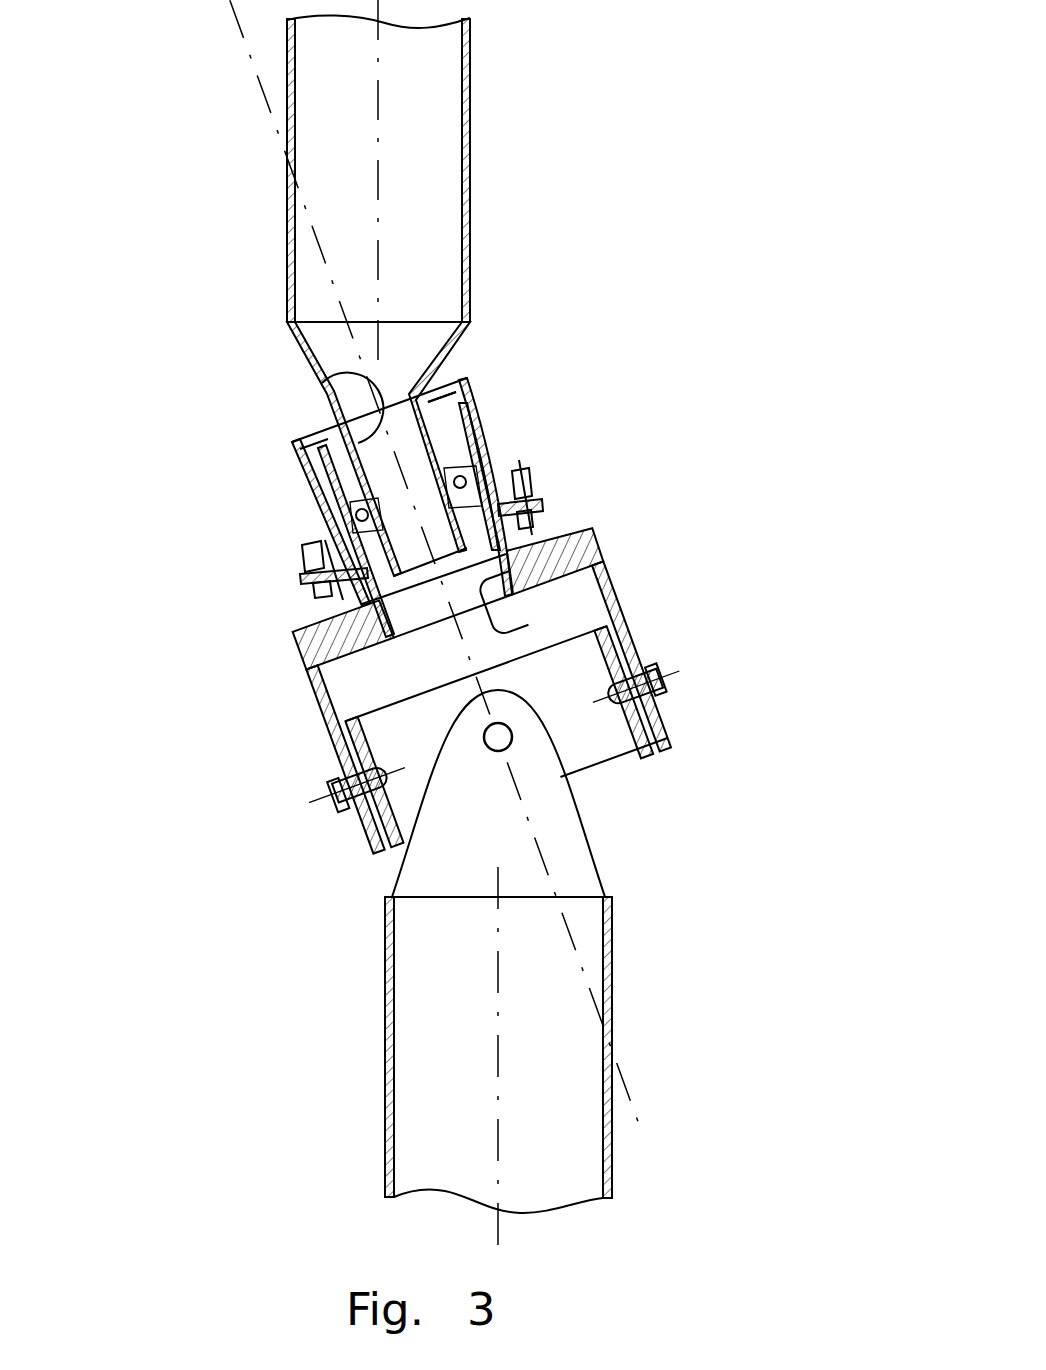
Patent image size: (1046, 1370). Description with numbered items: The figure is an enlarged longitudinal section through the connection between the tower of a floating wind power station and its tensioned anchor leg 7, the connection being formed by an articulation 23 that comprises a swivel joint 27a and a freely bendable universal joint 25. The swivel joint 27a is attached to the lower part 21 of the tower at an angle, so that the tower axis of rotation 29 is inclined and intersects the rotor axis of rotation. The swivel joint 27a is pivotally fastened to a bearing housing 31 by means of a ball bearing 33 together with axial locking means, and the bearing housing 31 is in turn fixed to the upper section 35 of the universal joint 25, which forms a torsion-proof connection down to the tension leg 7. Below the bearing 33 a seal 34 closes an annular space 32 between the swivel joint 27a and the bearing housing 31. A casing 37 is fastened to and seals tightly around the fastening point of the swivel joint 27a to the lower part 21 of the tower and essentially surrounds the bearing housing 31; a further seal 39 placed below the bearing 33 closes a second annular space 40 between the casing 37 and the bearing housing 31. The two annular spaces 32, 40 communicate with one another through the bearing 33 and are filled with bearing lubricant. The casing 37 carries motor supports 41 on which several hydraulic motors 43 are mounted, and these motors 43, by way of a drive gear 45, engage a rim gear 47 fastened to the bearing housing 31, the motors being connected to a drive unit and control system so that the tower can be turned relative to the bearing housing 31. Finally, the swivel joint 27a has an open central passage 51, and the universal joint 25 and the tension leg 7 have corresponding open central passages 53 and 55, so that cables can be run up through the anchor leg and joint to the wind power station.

The tensioned anchor leg 7 is at (384, 1088).
The lower part of the tower 21 is at (472, 88).
The articulation 23 is at (694, 278).
The universal joint 25 is at (672, 742).
The swivel joint 27a is at (297, 461).
The tower axis of rotation 29 is at (233, 21).
The bearing housing 31 is at (515, 550).
The annular space 32 is at (468, 480).
The ball bearing 33 is at (483, 413).
The seal 34 is at (345, 530).
The upper section of the universal joint 35 is at (297, 627).
The casing 37 is at (474, 389).
The seal 39 is at (320, 548).
The annular space 40 is at (330, 478).
The motor supports 41 is at (547, 493).
The hydraulic motors 43 is at (530, 476).
The drive gear 45 is at (540, 511).
The rim gear 47 is at (332, 613).
The open central passage 51 is at (322, 384).
The open central passage 53 is at (520, 633).
The open central passage 55 is at (533, 898).